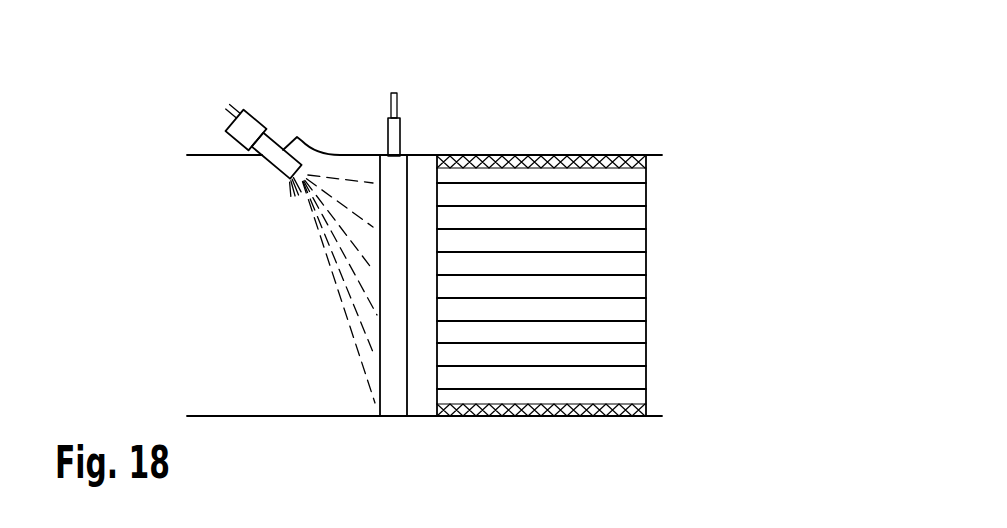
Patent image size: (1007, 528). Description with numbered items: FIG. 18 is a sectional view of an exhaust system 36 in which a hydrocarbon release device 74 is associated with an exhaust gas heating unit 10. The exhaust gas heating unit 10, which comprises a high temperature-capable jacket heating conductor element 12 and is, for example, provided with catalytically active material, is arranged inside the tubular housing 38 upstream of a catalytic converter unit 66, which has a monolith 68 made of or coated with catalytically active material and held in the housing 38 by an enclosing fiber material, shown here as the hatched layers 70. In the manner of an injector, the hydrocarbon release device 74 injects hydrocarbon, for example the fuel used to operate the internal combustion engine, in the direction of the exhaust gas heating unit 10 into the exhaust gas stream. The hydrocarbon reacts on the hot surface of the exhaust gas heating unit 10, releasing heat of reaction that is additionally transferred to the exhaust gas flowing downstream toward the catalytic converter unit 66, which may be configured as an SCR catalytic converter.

The exhaust gas heating unit 10 is at (380, 345).
The jacket heating conductor element 12 is at (388, 133).
The exhaust system 36 is at (702, 151).
The tubular housing 38 is at (423, 416).
The catalytic converter unit 66 is at (646, 242).
The monolith 68 is at (624, 308).
The seal 70 is at (626, 416).
The hydrocarbon release device 74 is at (257, 118).